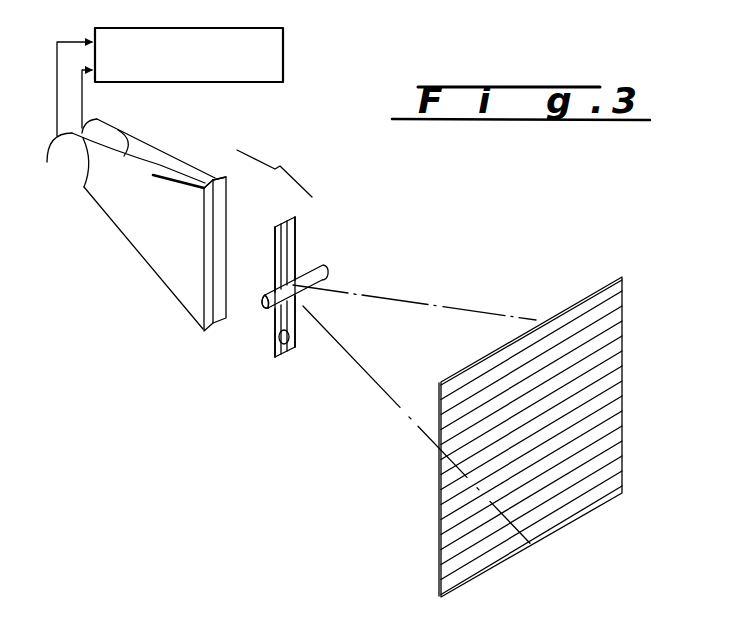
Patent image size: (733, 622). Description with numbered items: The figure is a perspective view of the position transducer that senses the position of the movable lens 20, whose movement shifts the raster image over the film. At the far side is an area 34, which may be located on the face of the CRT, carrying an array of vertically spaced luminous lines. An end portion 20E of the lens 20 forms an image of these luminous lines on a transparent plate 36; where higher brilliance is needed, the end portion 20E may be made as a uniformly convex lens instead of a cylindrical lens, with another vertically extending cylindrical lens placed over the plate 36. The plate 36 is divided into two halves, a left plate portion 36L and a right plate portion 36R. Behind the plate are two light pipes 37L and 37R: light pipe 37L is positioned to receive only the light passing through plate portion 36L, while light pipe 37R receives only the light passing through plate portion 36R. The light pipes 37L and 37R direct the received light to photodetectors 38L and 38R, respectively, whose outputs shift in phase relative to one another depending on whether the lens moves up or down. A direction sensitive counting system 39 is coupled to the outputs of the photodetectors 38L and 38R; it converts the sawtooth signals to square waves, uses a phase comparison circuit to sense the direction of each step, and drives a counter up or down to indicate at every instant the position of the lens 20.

The lens 20 is at (326, 267).
The end portion of lens 20E is at (277, 313).
The area with array of vertically spaced luminous lines 34 is at (565, 307).
The transparent plate 36 is at (300, 256).
The left plate portion 36L is at (278, 253).
The right plate portion 36R is at (297, 225).
The left light pipe 37L is at (170, 173).
The right light pipe 37R is at (210, 172).
The left photodetector 38L is at (48, 164).
The right photodetector 38R is at (97, 122).
The direction sensitive counting system 39 is at (287, 65).